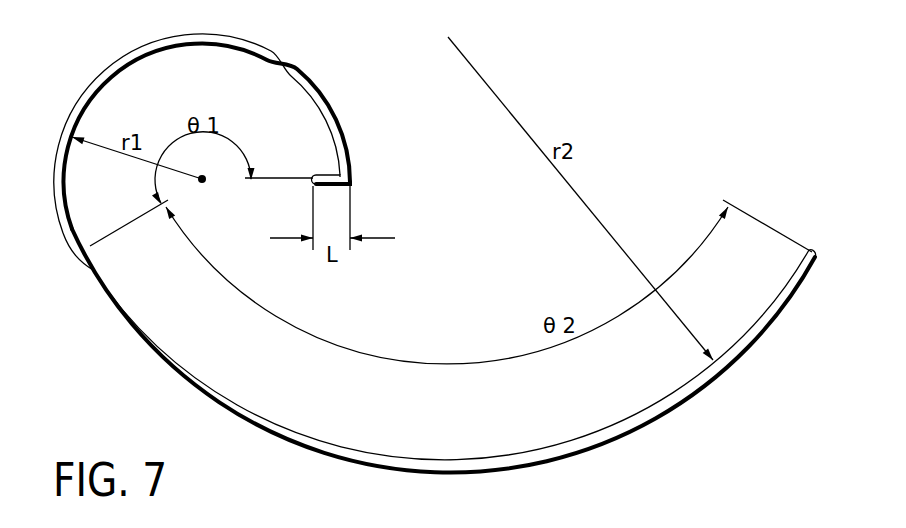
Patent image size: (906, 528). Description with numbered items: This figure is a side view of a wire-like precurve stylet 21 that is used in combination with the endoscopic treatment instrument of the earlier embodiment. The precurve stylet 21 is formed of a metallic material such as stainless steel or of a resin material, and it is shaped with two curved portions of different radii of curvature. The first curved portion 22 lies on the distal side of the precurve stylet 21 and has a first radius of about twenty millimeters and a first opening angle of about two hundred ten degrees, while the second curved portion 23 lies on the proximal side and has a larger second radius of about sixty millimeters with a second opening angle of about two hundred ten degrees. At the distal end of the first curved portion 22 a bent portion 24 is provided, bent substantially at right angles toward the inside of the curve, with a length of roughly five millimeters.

The precurve stylet 21 is at (435, 257).
The first curved portion 22 is at (302, 72).
The second curved portion 23 is at (268, 430).
The bent portion 24 is at (325, 176).